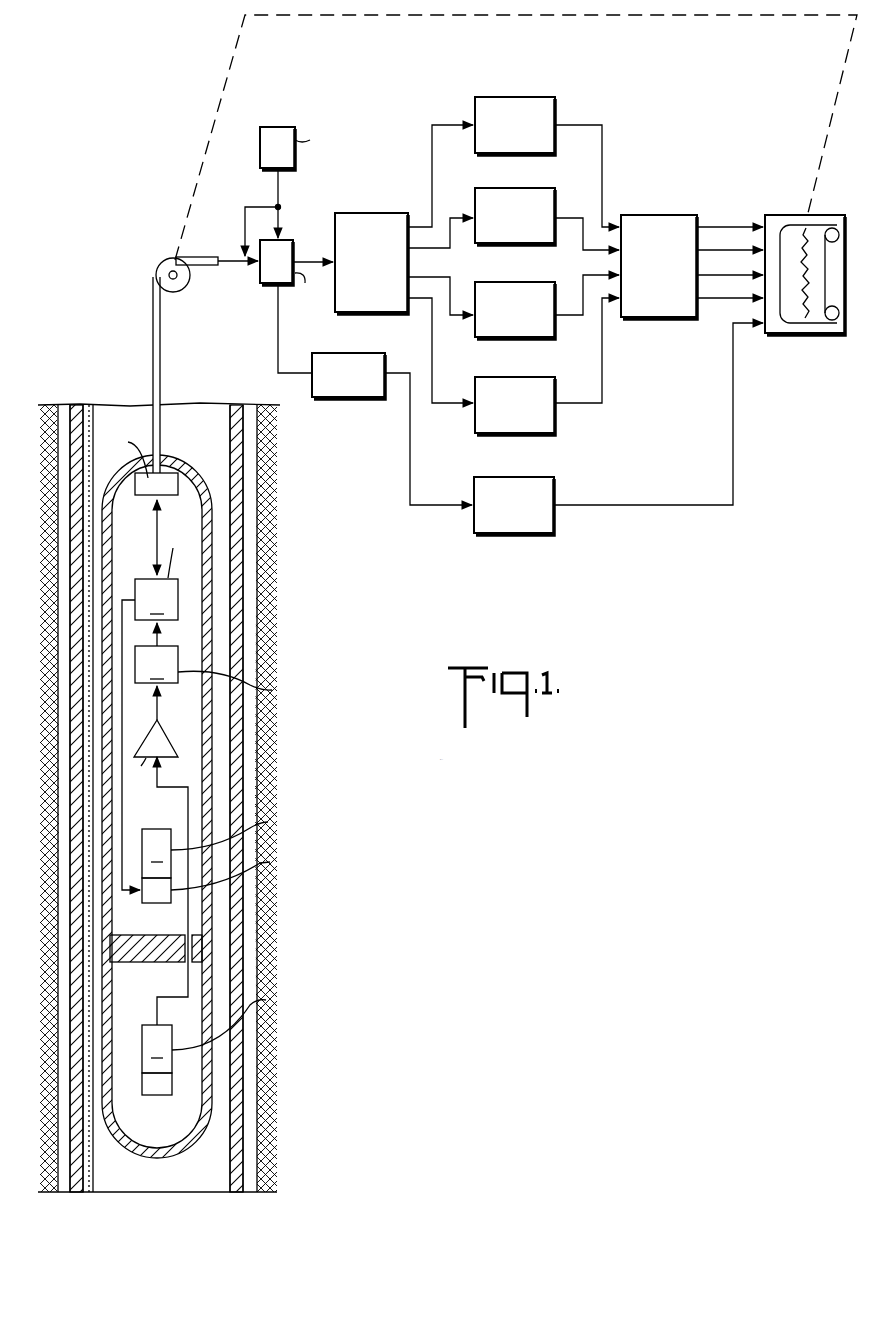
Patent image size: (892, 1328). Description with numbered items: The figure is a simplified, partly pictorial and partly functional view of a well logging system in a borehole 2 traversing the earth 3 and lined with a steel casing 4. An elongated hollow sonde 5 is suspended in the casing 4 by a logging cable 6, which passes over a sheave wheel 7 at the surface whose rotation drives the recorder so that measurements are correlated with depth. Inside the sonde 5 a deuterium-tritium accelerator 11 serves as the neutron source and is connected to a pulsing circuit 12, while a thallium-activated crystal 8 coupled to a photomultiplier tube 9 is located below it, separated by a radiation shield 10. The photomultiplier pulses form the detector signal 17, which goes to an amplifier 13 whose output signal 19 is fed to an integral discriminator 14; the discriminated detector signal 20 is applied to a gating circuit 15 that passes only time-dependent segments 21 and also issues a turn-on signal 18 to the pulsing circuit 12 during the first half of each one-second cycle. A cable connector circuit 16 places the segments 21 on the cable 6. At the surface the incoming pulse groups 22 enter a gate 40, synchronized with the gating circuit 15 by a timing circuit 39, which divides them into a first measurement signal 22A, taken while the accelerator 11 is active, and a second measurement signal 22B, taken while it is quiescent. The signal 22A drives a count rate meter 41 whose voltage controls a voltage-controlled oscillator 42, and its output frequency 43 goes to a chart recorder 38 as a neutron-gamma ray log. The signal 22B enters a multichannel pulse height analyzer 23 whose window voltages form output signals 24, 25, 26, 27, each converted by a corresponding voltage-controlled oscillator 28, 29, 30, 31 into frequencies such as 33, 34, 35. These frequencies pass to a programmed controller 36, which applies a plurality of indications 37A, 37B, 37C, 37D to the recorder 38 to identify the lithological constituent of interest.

The borehole 2 is at (251, 397).
The earth 3 is at (306, 669).
The steel casing 4 is at (237, 562).
The sonde 5 is at (201, 472).
The logging cable 6 is at (152, 348).
The sheave wheel 7 is at (183, 290).
The thallium-activated crystal 8 is at (157, 1096).
The photomultiplier tube 9 is at (248, 1033).
The radiation shield 10 is at (196, 915).
The deuterium-tritium accelerator 11 is at (278, 846).
The pulsing circuit 12 is at (160, 904).
The amplifier 13 is at (165, 746).
The integral discriminator 14 is at (221, 674).
The gating circuit 15 is at (156, 599).
The cable connector circuit 16 is at (141, 496).
The detector signal 17 is at (155, 1006).
The turn-on signal 18 is at (123, 812).
The amplifier output signal 19 is at (165, 716).
The discriminated detector signal 20 is at (162, 637).
The time-dependent detector signals 21 is at (151, 552).
The discriminated and time-dependent groups of pulses 22 is at (232, 256).
The first measurement signal 22A is at (278, 333).
The second measurement signal 22B is at (306, 250).
The multichannel pulse height analyzer 23 is at (366, 212).
The first output signal 24 is at (441, 122).
The output signal 25 is at (455, 216).
The output signal 26 is at (453, 320).
The output signal 27 is at (447, 410).
The voltage-controlled oscillator 28 is at (519, 97).
The voltage-controlled oscillator 29 is at (562, 192).
The voltage-controlled oscillator 30 is at (492, 339).
The voltage-controlled oscillator 31 is at (505, 434).
The output frequency 33 is at (585, 255).
The output frequency 34 is at (580, 322).
The output frequency 35 is at (580, 404).
The controller 36 is at (650, 215).
The indication 37A is at (705, 226).
The indication 37B is at (733, 249).
The indication 37C is at (706, 277).
The indication 37D is at (724, 300).
The chart recorder 38 is at (795, 335).
The timing circuit 39 is at (277, 124).
The gate 40 is at (262, 287).
The count rate meter 41 is at (360, 353).
The voltage-controlled oscillator 42 is at (498, 534).
The output frequency 43 is at (733, 428).